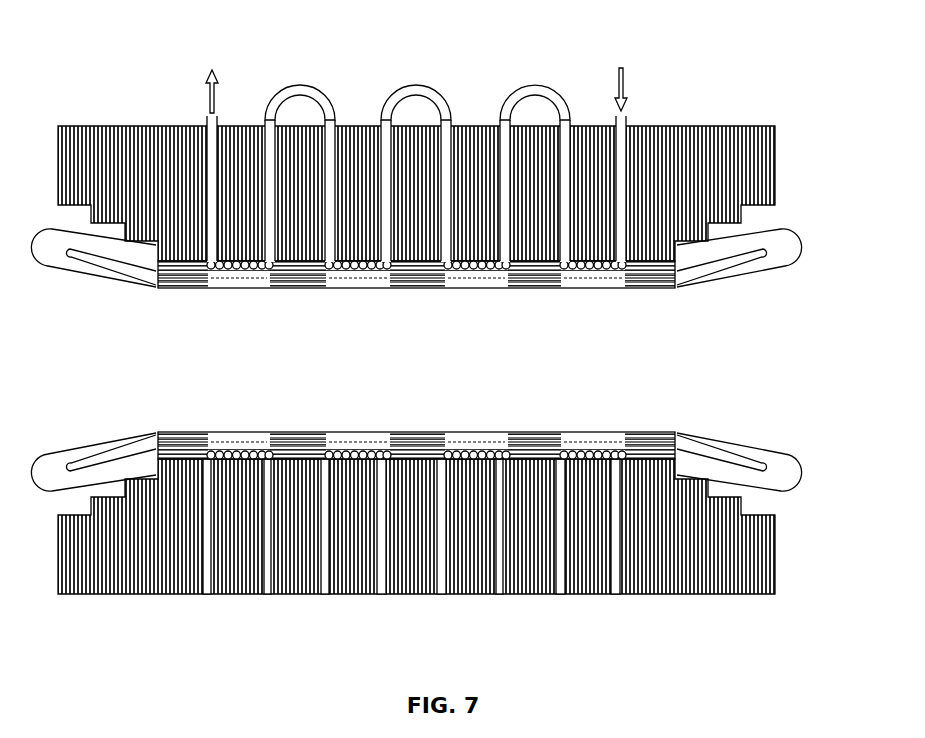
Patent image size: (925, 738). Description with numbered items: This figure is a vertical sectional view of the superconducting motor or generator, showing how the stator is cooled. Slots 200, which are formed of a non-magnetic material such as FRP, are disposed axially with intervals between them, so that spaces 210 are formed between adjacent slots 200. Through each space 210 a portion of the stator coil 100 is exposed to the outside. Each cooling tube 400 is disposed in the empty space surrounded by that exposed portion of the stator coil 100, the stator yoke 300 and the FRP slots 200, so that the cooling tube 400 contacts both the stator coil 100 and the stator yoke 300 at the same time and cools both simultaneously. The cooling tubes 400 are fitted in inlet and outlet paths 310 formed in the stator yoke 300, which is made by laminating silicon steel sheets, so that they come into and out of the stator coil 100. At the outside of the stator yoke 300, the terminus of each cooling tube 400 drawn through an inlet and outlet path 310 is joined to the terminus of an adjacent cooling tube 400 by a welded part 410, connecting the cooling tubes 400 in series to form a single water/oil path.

The stator coil 100 is at (583, 272).
The slots 200 is at (406, 270).
The spaces 210 is at (210, 260).
The stator yoke 300 is at (743, 180).
The inlet and outlet paths 310 is at (320, 162).
The cooling tubes 400 is at (238, 260).
The welded part 410 is at (525, 78).